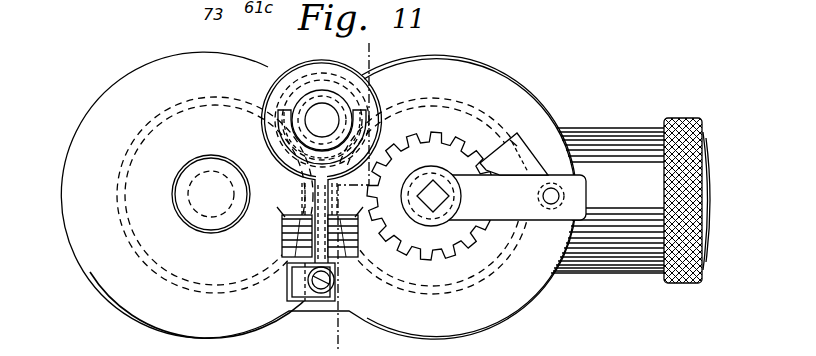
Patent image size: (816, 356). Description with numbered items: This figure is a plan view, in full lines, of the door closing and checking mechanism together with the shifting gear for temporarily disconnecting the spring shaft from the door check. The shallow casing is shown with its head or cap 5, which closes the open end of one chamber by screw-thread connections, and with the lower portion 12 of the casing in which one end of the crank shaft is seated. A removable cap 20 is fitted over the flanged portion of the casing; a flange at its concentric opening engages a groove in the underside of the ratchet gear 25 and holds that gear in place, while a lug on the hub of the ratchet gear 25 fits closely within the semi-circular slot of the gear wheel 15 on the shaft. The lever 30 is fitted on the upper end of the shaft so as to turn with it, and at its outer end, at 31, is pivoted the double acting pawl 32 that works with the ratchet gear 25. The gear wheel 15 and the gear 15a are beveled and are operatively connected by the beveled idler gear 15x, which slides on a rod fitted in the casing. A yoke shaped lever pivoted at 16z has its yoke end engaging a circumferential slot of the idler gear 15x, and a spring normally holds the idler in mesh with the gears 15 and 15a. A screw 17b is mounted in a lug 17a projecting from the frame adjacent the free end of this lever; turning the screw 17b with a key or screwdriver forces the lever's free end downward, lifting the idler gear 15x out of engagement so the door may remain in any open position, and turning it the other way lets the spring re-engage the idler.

The head or cap 5 is at (682, 162).
The lower portion of the casing 12 is at (380, 57).
The gear wheel 15 is at (485, 138).
The beveled gear 15a is at (110, 181).
The beveled idler gear 15x is at (306, 68).
The pivot of yoke shaped lever 16z is at (281, 232).
The lug 17a is at (287, 284).
The screw 17b is at (334, 285).
The removable cap 20 is at (187, 63).
The ratchet gear 25 is at (443, 152).
The lever 30 is at (493, 196).
The pawl pivot at outer end of lever 31 is at (552, 210).
The double acting pawl 32 is at (514, 134).